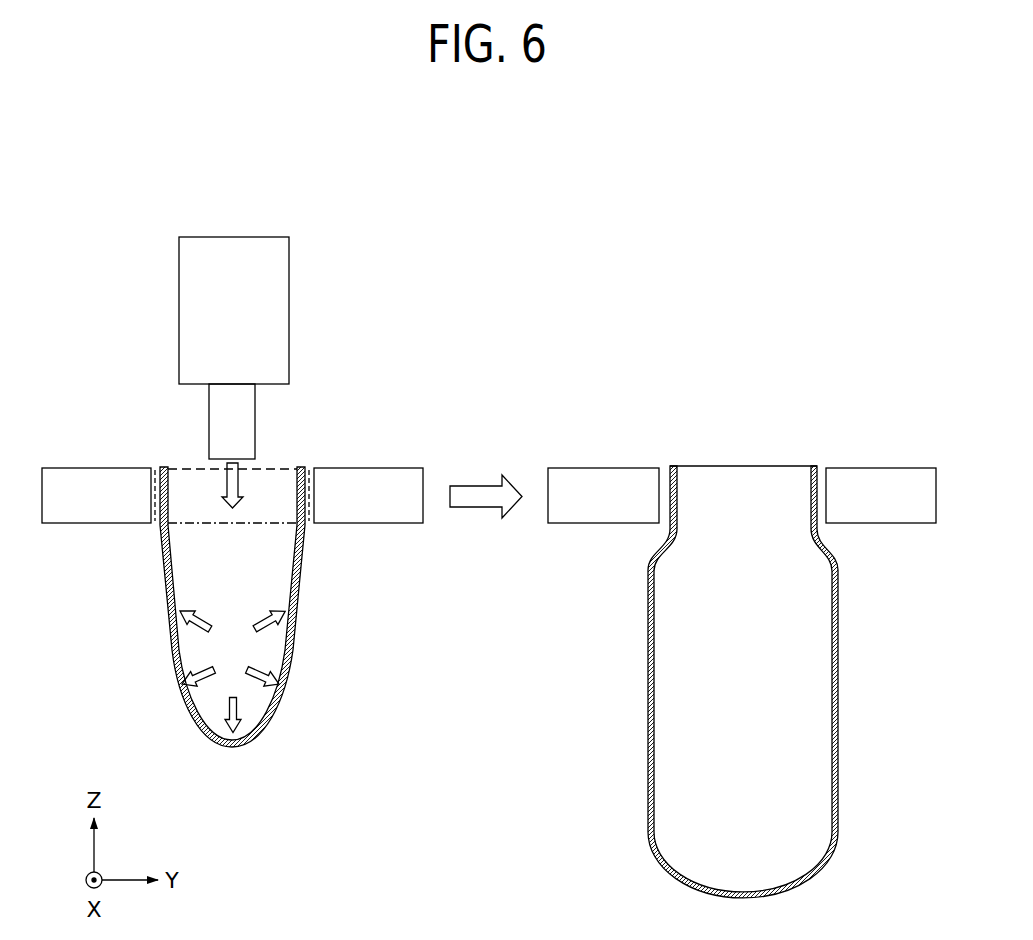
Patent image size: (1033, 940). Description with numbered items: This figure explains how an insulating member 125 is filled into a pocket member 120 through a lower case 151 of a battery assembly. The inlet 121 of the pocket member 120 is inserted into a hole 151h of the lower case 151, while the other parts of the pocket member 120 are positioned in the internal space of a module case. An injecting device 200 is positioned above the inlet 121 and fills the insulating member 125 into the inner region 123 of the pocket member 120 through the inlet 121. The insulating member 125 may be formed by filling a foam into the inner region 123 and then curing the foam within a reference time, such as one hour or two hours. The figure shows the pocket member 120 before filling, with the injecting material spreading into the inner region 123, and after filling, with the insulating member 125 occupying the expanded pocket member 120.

The injecting device 200 is at (232, 232).
The lower case 151 is at (489, 495).
The hole 151h is at (155, 465).
The inlet 121 is at (273, 473).
The pocket member 120 is at (161, 573).
The inner region 123 is at (262, 593).
The insulating member 125 is at (666, 763).